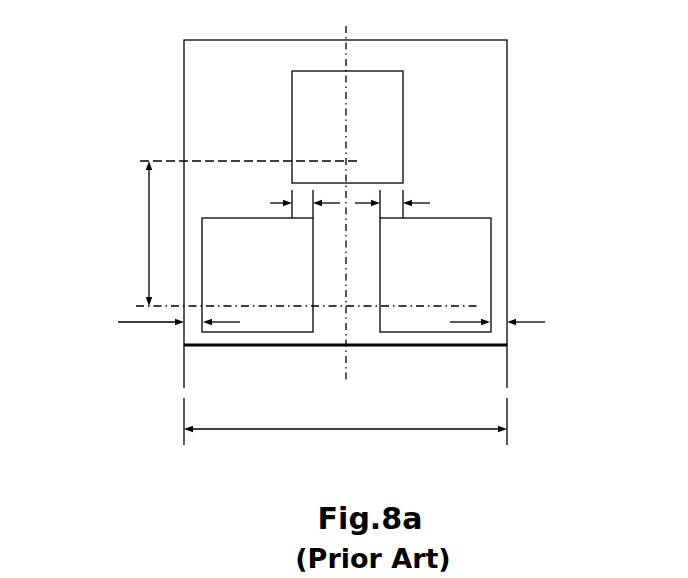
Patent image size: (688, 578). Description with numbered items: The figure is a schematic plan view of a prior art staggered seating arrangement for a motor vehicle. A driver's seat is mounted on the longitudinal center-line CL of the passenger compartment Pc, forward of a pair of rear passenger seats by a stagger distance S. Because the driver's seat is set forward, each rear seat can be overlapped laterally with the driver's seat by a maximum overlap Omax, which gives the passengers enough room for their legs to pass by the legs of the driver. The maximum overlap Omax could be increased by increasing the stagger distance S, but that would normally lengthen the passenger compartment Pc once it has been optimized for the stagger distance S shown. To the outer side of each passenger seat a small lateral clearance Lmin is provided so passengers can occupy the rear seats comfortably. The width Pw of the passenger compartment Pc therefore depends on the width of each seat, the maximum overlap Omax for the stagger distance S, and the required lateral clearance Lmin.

The passenger compartment Pc is at (188, 86).
The longitudinal center-line CL is at (348, 193).
The stagger distance S is at (297, 233).
The maximum overlap Omax is at (348, 204).
The lateral clearance Lmin is at (314, 314).
The width of the passenger compartment Pw is at (345, 421).